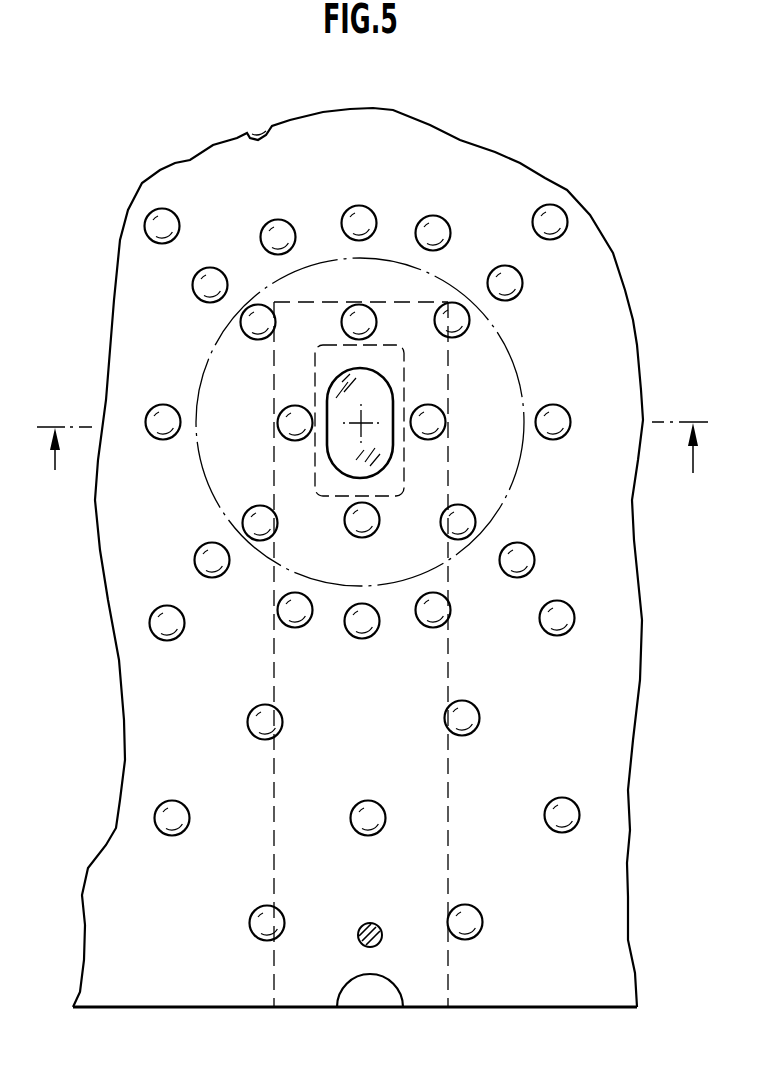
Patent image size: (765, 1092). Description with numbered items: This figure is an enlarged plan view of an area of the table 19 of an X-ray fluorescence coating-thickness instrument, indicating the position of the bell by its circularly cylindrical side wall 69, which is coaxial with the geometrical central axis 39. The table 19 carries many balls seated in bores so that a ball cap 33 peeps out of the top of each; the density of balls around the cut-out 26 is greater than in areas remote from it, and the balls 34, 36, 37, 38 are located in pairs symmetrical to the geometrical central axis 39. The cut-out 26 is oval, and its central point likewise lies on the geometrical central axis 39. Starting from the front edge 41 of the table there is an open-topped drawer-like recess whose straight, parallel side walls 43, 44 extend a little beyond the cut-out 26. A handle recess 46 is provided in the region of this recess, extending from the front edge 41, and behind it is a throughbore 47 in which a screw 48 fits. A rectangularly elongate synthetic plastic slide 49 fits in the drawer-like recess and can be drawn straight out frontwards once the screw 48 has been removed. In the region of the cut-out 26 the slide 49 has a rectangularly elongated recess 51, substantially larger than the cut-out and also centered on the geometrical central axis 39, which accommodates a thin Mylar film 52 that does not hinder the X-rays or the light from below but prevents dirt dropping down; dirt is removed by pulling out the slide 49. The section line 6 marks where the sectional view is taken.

The table 19 is at (163, 983).
The cut-out 26 is at (388, 455).
The ball cap 33 is at (433, 623).
The ball 34 is at (373, 535).
The ball 36 is at (353, 317).
The ball 37 is at (283, 420).
The ball 38 is at (445, 417).
The geometrical central axis 39 is at (362, 420).
The front edge 41 is at (540, 1008).
The side wall 43 is at (276, 770).
The side wall 44 is at (447, 770).
The handle recess 46 is at (388, 1006).
The throughbore 47 is at (383, 938).
The screw 48 is at (362, 925).
The synthetic plastic slide 49 is at (356, 995).
The rectangularly elongated recess 51 is at (407, 301).
The film 52 is at (353, 458).
The circularly cylindrical side wall 69 is at (507, 338).
The section line 6- 6 is at (372, 434).